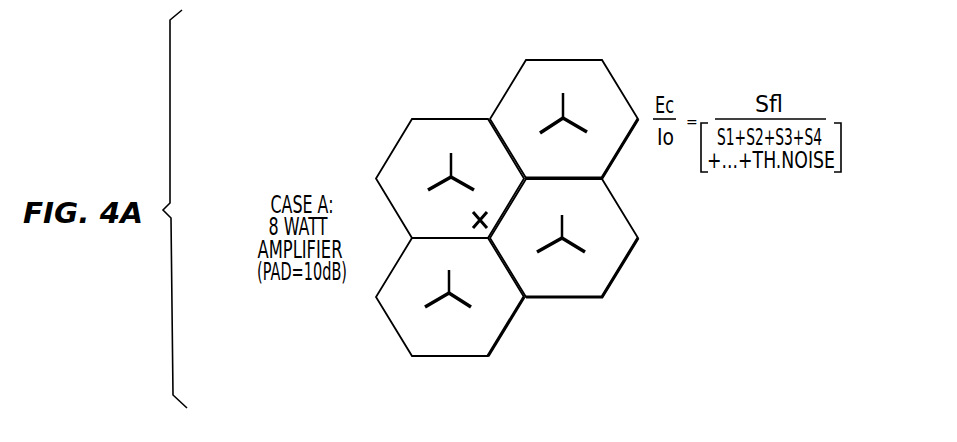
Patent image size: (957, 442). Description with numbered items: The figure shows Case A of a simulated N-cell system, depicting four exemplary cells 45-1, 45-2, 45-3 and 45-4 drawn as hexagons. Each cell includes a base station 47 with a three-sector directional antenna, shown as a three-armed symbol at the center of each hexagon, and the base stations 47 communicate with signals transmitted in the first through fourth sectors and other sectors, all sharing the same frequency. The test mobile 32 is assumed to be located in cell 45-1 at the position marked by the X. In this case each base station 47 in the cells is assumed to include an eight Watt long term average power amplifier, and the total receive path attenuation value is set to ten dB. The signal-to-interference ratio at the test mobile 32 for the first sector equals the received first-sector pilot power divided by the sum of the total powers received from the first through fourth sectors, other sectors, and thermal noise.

The cell 45-1 is at (448, 118).
The cell 45-2 is at (450, 356).
The cell 45-3 is at (562, 60).
The cell 45-4 is at (565, 298).
The base station 47 is at (445, 176).
The test mobile 32 is at (473, 219).